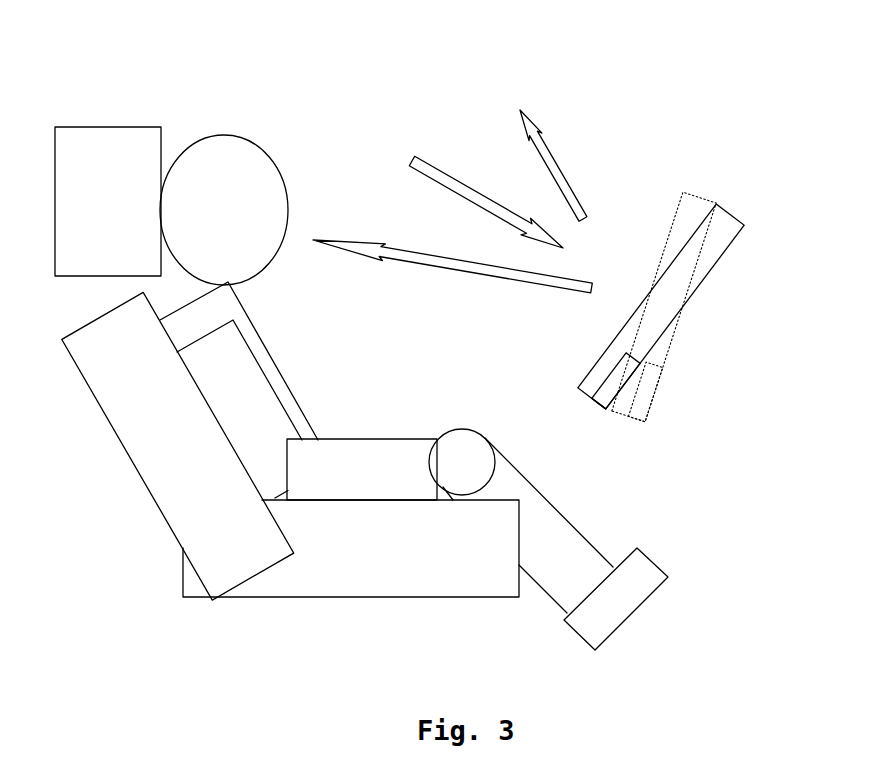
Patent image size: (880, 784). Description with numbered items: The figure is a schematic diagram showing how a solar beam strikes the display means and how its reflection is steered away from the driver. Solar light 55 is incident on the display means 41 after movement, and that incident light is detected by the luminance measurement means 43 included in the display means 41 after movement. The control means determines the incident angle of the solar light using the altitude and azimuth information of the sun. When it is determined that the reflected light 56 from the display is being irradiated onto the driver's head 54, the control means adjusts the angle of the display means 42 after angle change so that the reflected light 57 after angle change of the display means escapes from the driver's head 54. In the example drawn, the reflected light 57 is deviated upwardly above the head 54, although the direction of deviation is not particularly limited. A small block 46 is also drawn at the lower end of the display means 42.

The display means after movement 41 is at (687, 208).
The display means after angle change 42 is at (718, 227).
The luminance measurement means 43 is at (608, 409).
The mirror holder block 46 is at (602, 347).
The driver's head 54 is at (213, 157).
The solar light 55 is at (450, 183).
The reflected light 56 is at (493, 273).
The reflected light after angle change of the display means 57 is at (557, 163).